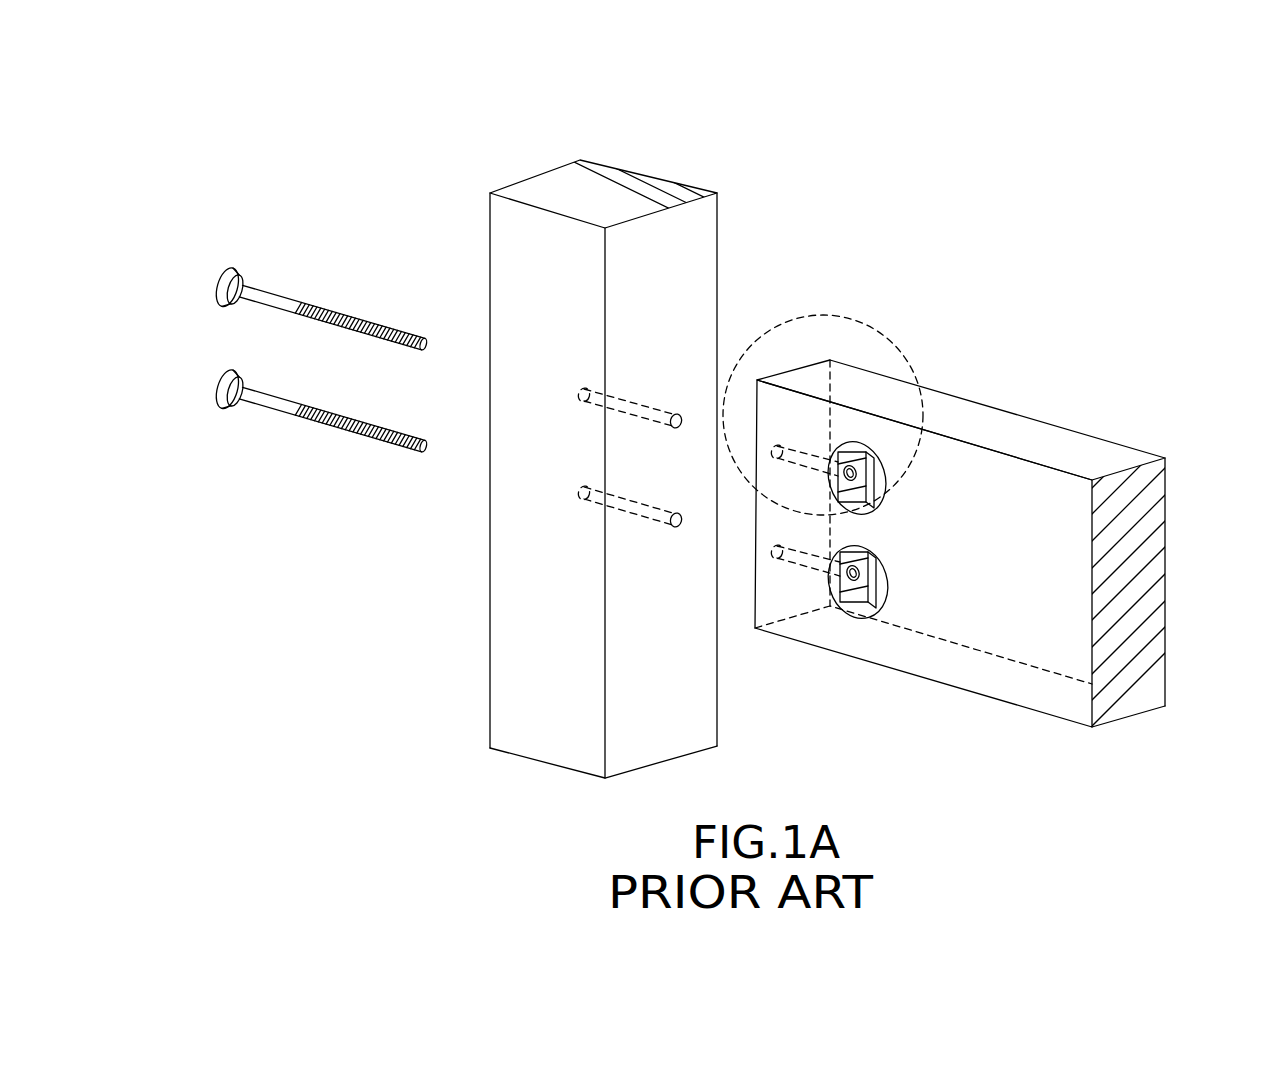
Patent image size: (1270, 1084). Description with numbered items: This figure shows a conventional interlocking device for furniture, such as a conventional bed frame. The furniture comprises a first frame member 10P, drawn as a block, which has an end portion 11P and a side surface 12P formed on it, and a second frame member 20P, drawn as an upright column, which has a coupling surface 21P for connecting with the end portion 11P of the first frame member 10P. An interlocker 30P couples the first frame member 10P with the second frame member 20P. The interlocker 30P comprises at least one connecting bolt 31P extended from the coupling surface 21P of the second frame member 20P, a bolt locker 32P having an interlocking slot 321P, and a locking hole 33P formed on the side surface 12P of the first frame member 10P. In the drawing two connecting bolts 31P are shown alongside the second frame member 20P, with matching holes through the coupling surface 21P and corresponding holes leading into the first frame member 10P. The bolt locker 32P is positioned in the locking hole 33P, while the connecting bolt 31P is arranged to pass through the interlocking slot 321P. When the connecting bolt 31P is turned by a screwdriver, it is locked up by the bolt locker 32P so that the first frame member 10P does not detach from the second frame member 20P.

The first frame member 10P is at (1050, 438).
The end portion 11P is at (818, 383).
The side surface 12P is at (987, 620).
The second frame member 20P is at (527, 293).
The coupling surface 21P is at (652, 320).
The interlocker 30P is at (358, 182).
The connecting bolt 31P is at (277, 302).
The bolt locker 32P is at (873, 563).
The interlocking slot 321P is at (855, 466).
The locking hole 33P is at (853, 612).